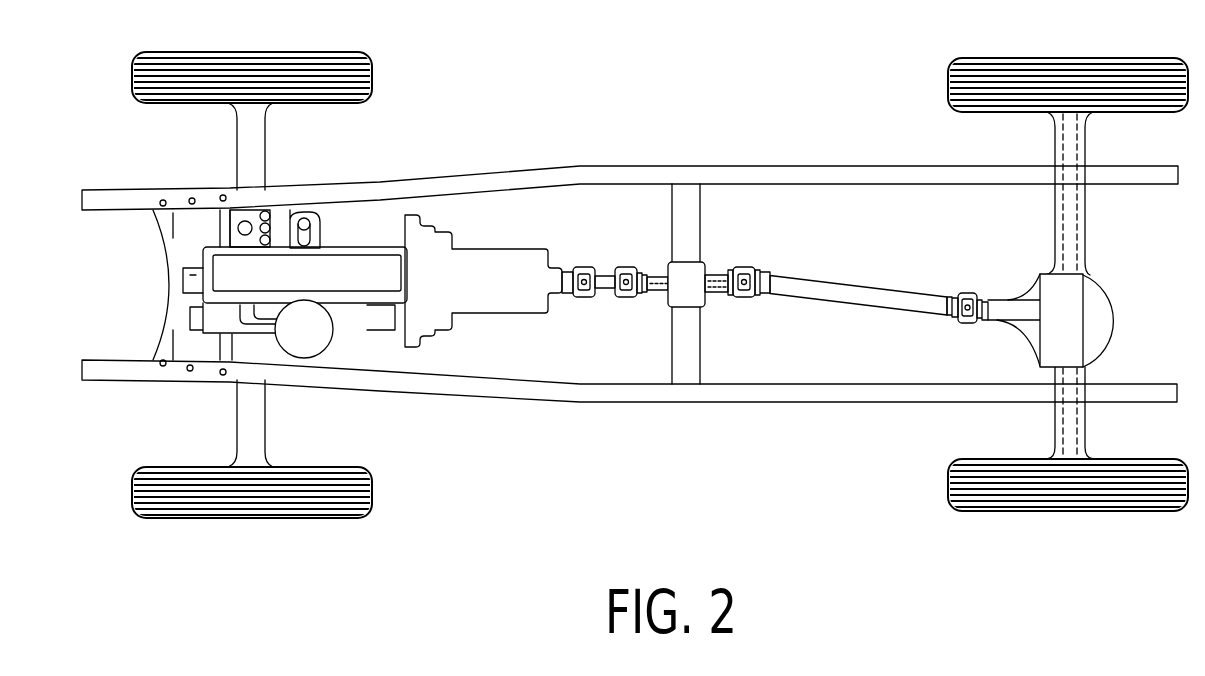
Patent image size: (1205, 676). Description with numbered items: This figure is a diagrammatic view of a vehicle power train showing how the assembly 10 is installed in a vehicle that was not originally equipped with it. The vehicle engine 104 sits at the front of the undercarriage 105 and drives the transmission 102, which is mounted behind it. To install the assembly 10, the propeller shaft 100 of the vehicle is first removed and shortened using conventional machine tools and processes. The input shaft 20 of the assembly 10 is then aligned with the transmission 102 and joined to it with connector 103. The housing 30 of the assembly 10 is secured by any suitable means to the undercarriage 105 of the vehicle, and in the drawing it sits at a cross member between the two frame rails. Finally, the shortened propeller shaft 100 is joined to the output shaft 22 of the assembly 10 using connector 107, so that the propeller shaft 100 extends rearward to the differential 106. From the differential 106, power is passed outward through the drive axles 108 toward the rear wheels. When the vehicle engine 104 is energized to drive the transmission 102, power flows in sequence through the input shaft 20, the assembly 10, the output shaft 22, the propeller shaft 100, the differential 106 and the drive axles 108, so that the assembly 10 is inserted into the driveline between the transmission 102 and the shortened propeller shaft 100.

The assembly 10 is at (728, 233).
The input shaft 20 is at (659, 272).
The output shaft 22 is at (719, 272).
The housing 30 is at (678, 293).
The propeller shaft 100 is at (882, 294).
The transmission 102 is at (498, 265).
The connector 103 is at (603, 288).
The vehicle engine 104 is at (222, 272).
The undercarriage 105 is at (764, 393).
The differential 106 is at (1100, 318).
The connector 107 is at (745, 298).
The drive axles 108 is at (1086, 214).